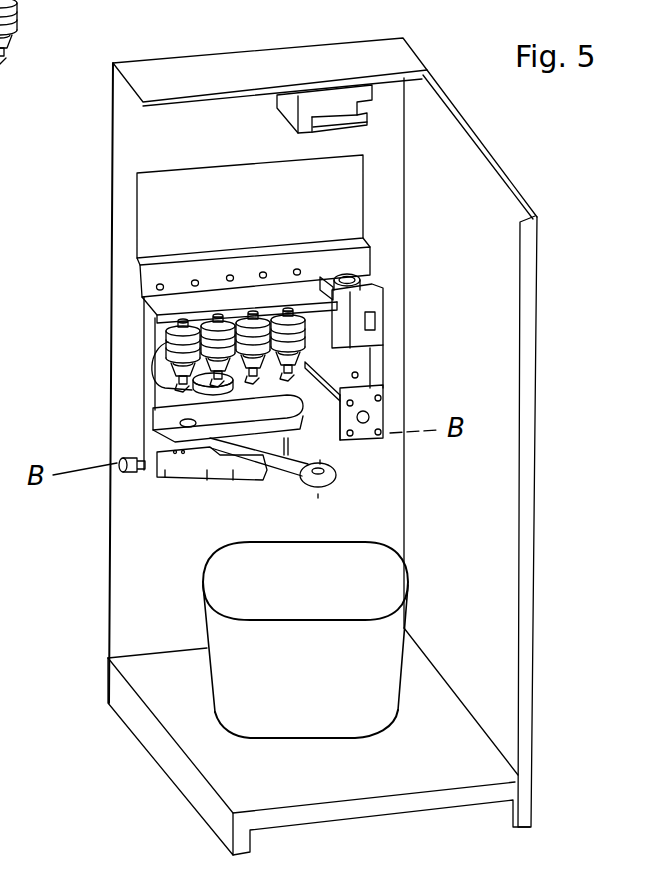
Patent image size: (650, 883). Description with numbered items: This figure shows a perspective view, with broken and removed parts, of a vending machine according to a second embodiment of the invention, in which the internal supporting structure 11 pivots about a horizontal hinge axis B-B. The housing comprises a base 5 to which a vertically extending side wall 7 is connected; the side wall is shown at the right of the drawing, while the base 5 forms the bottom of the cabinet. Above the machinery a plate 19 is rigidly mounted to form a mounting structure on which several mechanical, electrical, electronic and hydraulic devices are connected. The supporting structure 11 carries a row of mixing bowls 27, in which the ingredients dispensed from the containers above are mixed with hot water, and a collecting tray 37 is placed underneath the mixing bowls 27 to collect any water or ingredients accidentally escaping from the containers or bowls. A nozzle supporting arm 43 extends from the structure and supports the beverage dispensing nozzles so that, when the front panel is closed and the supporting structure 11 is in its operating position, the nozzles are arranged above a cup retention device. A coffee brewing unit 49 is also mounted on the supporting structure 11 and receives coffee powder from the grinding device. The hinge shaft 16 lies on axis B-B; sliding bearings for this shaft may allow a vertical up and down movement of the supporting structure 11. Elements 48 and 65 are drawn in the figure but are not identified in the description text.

The base 5 is at (217, 765).
The side wall 7 is at (500, 290).
The supporting structure 11 is at (412, 227).
The hinge shaft 16 is at (124, 476).
The plate 19 is at (161, 204).
The mixing bowls 27 is at (176, 368).
The collecting tray 37 is at (172, 425).
The nozzle supporting arm 43 is at (292, 474).
The adjusting mechanism 48 is at (360, 278).
The coffee brewing unit 49 is at (366, 432).
The top bracket 65 is at (327, 97).